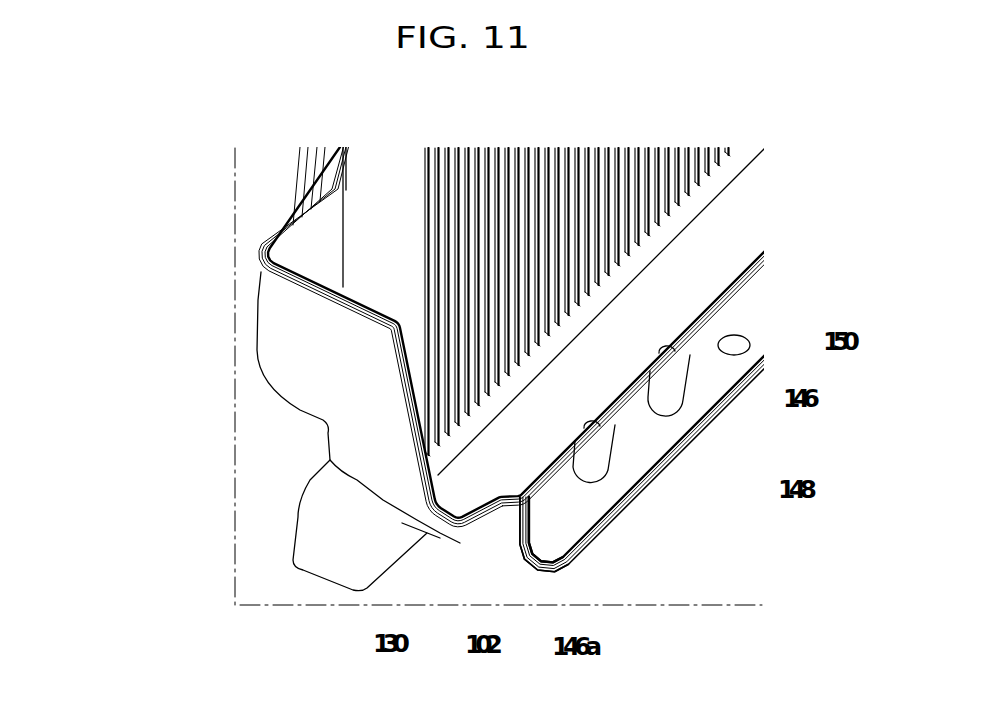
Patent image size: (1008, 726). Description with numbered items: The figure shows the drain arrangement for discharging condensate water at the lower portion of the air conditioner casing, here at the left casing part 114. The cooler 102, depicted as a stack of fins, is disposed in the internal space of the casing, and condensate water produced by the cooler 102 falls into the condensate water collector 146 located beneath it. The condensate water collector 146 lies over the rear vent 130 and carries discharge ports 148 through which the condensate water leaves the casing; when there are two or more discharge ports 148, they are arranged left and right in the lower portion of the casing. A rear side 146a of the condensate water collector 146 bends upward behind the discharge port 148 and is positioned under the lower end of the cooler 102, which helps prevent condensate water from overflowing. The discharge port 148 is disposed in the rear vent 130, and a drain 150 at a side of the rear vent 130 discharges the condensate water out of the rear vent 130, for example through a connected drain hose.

The cooler 102 is at (470, 423).
The left casing part 114 is at (273, 352).
The rear vent 130 is at (443, 535).
The condensate water collector 146 is at (778, 398).
The rear side of the condensate water collector 146a is at (553, 577).
The discharge port 148 is at (775, 492).
The drain 150 is at (822, 342).